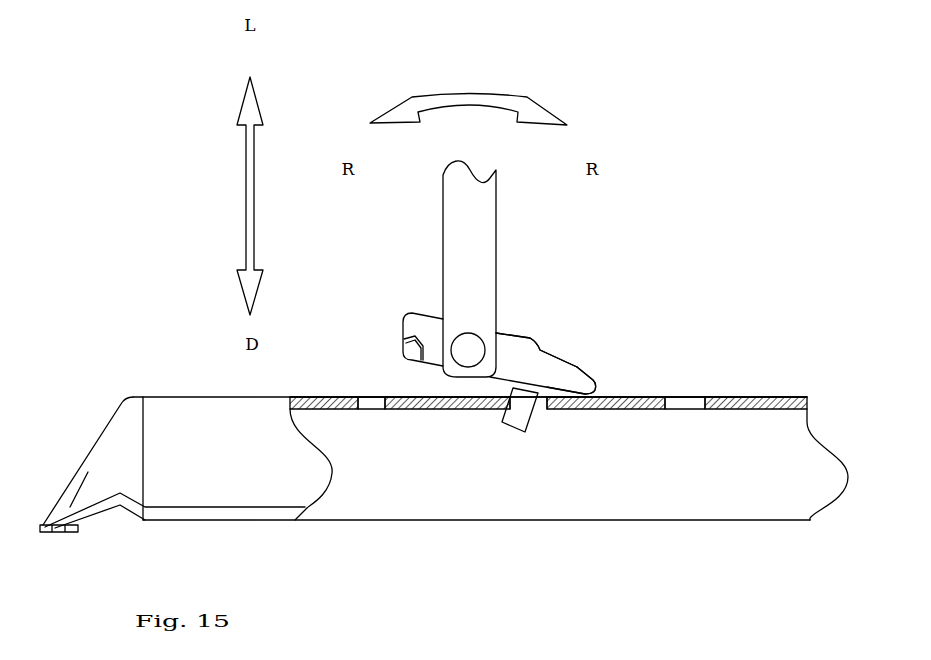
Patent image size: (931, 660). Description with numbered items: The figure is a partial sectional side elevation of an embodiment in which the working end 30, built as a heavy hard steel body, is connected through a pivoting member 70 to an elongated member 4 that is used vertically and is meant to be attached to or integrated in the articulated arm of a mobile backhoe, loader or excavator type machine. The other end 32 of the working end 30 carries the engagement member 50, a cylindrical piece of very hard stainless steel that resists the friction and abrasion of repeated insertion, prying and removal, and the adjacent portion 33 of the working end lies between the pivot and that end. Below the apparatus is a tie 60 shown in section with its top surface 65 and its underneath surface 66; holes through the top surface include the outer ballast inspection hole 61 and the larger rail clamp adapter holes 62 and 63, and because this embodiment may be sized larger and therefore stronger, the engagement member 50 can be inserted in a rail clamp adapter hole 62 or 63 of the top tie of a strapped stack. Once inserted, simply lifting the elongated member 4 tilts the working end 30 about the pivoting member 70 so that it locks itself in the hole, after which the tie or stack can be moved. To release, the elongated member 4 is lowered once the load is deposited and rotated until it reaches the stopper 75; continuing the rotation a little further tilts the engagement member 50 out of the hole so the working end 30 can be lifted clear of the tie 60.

The elongated member 4 is at (470, 243).
The working end 30 is at (584, 351).
The other end 32 is at (578, 383).
The clamping arm 33 is at (517, 358).
The engagement member 50 is at (523, 410).
The tie 60 is at (163, 408).
The outer ballast inspection hole 61 is at (372, 409).
The rail clamp adapter hole 62 is at (543, 409).
The rail clamp adapter hole 63 is at (682, 409).
The top surface 65 is at (790, 395).
The underneath surface 66 is at (768, 411).
The pivoting member 70 is at (473, 350).
The stopper 75 is at (405, 340).